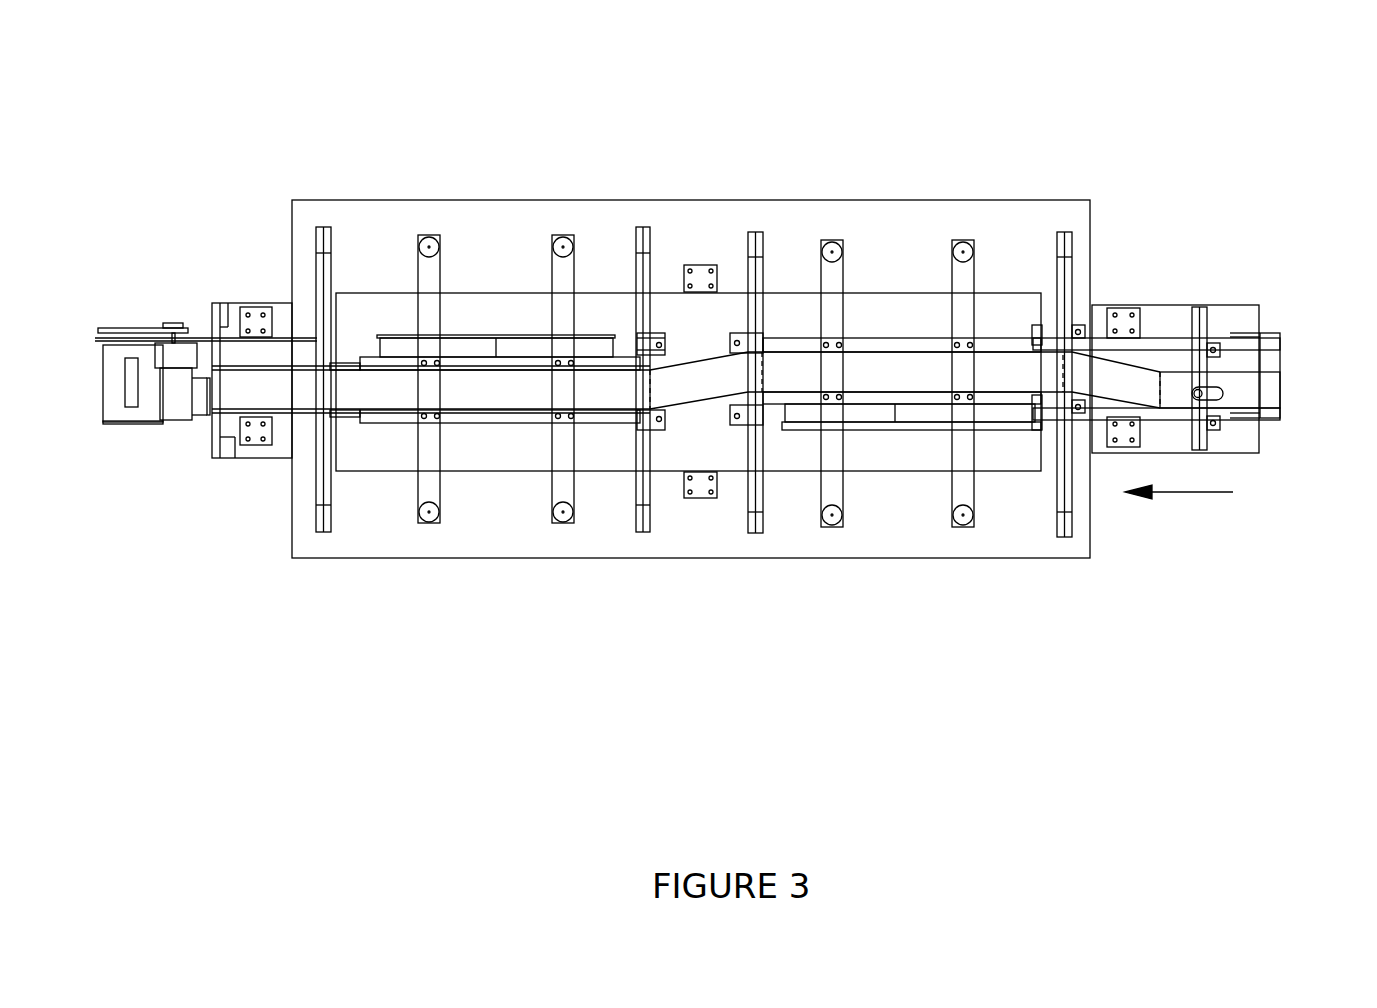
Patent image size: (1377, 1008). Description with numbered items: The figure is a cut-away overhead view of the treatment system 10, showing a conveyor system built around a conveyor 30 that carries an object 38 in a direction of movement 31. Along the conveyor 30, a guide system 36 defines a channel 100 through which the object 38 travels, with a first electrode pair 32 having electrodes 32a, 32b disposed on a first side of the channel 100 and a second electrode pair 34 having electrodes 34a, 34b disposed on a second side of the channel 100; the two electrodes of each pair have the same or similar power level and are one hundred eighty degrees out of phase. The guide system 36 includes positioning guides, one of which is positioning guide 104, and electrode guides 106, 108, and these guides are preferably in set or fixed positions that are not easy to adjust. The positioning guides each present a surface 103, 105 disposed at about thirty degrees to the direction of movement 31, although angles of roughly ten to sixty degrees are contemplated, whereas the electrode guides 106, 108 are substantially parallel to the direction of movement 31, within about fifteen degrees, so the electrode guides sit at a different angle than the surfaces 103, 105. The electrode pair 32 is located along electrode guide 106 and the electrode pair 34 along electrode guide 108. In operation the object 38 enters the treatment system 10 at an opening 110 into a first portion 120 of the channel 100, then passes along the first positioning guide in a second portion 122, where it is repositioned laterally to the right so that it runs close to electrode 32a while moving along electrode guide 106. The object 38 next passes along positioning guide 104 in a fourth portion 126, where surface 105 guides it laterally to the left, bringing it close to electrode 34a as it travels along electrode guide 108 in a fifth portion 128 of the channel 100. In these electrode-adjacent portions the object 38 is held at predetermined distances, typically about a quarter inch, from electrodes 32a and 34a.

The treatment system 10 is at (655, 102).
The conveyor 30 is at (377, 483).
The direction of movement 31 is at (1179, 501).
The first electrode pair 32 is at (868, 263).
The electrode 32a is at (895, 437).
The electrode 32b is at (908, 322).
The second electrode pair 34 is at (463, 275).
The electrode 34a is at (495, 317).
The electrode 34b is at (495, 443).
The guide system 36 is at (1262, 392).
The object 38 is at (1222, 387).
The channel 100 is at (230, 393).
The surface 103 is at (1140, 377).
The positioning guide 104 is at (708, 348).
The surface 105 is at (670, 367).
The electrode guide 106 is at (772, 392).
The electrode guide 108 is at (623, 367).
The opening 110 is at (1263, 360).
The first portion 120 is at (1180, 368).
The second portion 122 is at (1102, 352).
The fourth portion 126 is at (707, 405).
The fifth portion 128 is at (347, 362).